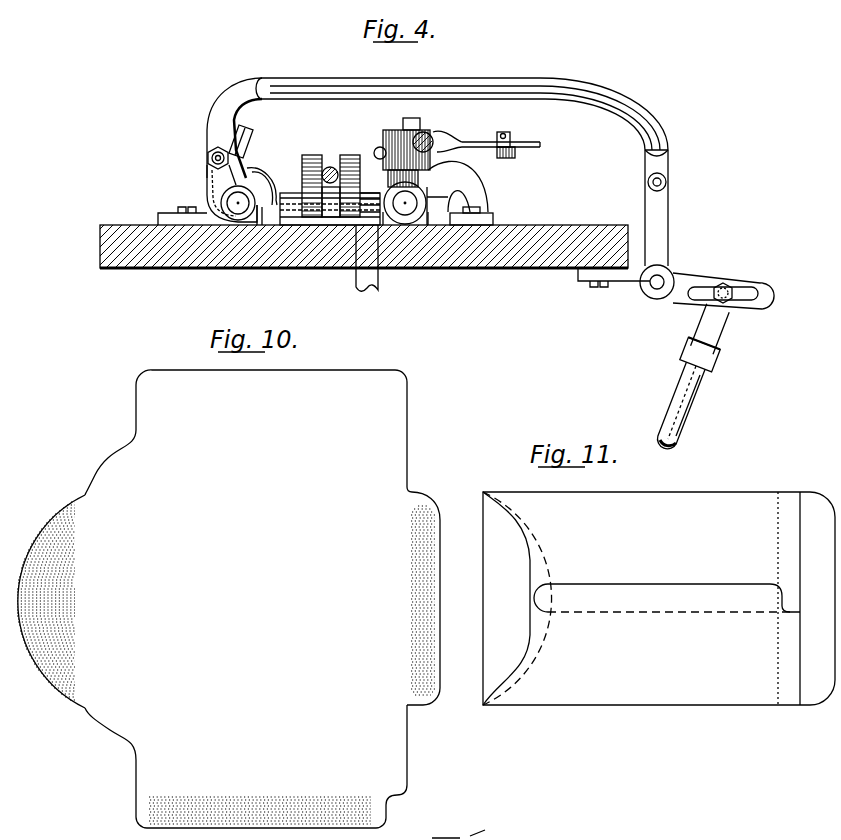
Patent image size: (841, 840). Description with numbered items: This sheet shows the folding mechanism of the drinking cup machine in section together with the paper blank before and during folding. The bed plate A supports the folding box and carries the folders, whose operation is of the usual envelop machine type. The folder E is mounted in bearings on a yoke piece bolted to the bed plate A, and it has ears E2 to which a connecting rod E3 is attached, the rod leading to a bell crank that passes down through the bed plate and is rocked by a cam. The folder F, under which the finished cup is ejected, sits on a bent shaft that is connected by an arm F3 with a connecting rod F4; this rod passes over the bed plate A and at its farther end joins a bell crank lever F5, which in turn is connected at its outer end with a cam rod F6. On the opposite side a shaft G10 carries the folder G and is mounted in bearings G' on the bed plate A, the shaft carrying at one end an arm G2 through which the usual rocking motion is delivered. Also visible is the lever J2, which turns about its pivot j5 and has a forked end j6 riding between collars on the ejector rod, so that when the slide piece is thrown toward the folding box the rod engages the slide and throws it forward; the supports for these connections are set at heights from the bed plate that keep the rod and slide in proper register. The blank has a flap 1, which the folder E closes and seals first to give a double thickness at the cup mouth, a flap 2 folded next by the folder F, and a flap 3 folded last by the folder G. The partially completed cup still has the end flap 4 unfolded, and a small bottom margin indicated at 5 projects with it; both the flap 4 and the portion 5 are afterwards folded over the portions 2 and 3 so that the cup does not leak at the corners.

In FIG. 4, the bed plate A is at (553, 226).
In FIG. 4, the connecting rod F4 is at (574, 80).
In FIG. 4, the bell crank lever F5 is at (670, 250).
In FIG. 4, the cam rod F6 is at (694, 407).
In FIG. 4, the arm F3 is at (212, 170).
In FIG. 4, the folder F is at (252, 134).
In FIG. 4, the folder E is at (298, 178).
In FIG. 4, the ears E2 is at (305, 160).
In FIG. 4, the connecting rod E3 is at (332, 167).
In FIG. 4, the folder G is at (411, 164).
In FIG. 4, the shaft G10 is at (405, 205).
In FIG. 4, the bearings G' is at (471, 193).
In FIG. 4, the arm G2 is at (357, 278).
In FIG. 4, the lever J2 is at (488, 137).
In FIG. 4, the forked end j6 is at (440, 138).
In FIG. 4, the pivot j5 is at (520, 140).
In FIG. 10, the flap 1 is at (76, 595).
In FIG. 11, the flap 1 is at (517, 598).
In FIG. 10, the flap 2 is at (271, 428).
In FIG. 11, the flap 2 is at (659, 598).
In FIG. 10, the flap 3 is at (271, 794).
In FIG. 11, the flap 3 is at (667, 626).
In FIG. 10, the end flap 4 is at (432, 505).
In FIG. 11, the end flap 4 is at (811, 598).
In FIG. 10, the portion 5 is at (398, 635).
In FIG. 11, the portion 5 is at (785, 598).